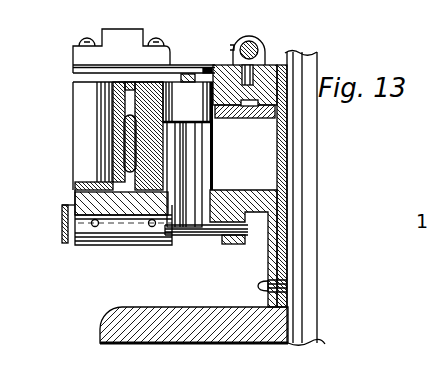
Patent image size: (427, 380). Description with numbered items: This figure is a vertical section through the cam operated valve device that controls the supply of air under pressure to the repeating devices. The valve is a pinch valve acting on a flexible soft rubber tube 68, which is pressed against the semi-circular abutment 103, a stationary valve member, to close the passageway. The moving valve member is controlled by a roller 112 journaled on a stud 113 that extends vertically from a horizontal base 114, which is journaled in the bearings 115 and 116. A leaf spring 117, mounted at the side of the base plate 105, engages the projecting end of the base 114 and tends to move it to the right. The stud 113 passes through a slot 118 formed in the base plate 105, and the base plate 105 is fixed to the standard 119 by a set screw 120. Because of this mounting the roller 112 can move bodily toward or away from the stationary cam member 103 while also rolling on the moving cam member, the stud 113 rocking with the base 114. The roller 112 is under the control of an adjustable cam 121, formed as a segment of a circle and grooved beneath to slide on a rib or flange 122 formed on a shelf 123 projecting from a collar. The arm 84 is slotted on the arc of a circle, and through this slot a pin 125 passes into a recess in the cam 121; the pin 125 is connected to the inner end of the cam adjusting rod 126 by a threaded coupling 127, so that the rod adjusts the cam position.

The arm 84 is at (75, 48).
The semi-circular abutment 103 is at (112, 105).
The flexible soft rubber tube 68 is at (125, 140).
The leaf spring 117 is at (62, 210).
The bearing 116 is at (83, 244).
The slot 118 is at (175, 242).
The roller 112 is at (183, 90).
The stud 113 is at (200, 173).
The horizontal base 114 is at (203, 244).
The bearing 115 is at (245, 244).
The base plate 105 is at (255, 200).
The set screw 120 is at (265, 293).
The standard 119 is at (206, 330).
The adjustable cam 121 is at (272, 78).
The rib or flange 122 is at (238, 108).
The shelf 123 is at (244, 135).
The pin 125 is at (330, 48).
The cam adjusting rod 126 is at (240, 42).
The threaded coupling 127 is at (250, 37).